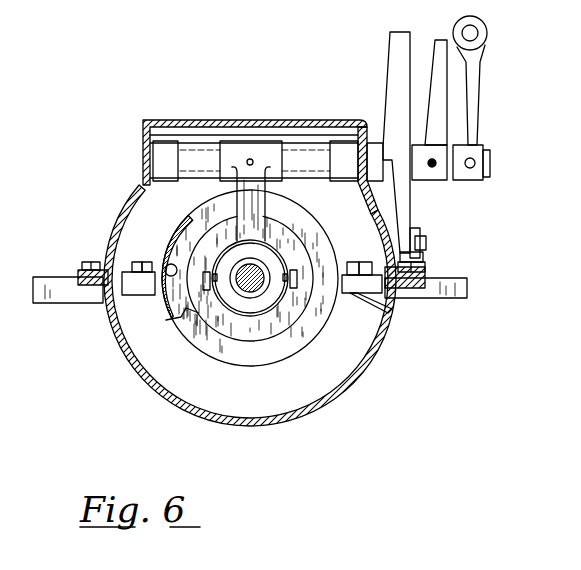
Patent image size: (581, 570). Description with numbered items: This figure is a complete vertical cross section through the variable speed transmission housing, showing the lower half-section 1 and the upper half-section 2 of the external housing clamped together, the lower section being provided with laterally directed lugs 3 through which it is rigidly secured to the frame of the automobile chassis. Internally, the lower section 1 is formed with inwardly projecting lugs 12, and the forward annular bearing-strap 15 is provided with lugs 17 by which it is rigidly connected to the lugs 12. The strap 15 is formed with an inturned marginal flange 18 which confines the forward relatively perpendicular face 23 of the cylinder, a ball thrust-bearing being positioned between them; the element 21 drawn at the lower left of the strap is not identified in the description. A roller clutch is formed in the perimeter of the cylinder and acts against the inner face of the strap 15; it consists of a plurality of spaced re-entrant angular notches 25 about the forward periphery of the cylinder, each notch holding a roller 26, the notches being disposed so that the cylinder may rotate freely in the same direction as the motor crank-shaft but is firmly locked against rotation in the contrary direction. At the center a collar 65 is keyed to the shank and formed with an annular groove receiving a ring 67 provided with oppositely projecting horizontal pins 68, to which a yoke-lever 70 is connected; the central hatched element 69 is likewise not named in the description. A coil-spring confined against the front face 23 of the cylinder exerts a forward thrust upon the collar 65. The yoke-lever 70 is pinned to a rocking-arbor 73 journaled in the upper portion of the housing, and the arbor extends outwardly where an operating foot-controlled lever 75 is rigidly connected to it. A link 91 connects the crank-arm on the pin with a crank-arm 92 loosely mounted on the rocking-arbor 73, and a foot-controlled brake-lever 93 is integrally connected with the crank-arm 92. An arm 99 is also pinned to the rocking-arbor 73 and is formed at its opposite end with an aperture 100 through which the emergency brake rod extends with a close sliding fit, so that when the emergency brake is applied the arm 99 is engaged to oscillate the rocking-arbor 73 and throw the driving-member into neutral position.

The lower half-section of the external housing 1 is at (378, 358).
The upper half-section of the external housing 2 is at (115, 215).
The laterally directed lugs 3 is at (43, 283).
The projecting lugs 12 is at (108, 303).
The forward annular bearing-strap 15 is at (177, 303).
The lugs of the bearing-straps 17 is at (128, 318).
The inturned marginal flange 18 is at (307, 330).
The band end 21 is at (183, 327).
The forward face of the cylinder 23 is at (283, 320).
The re-entrant angular notches 25 is at (168, 265).
The roller 26 is at (160, 266).
The collar 65 is at (230, 285).
The ring 67 is at (245, 313).
The oppositely projecting pins 68 is at (300, 277).
The shaft 69 is at (250, 290).
The yoke-lever 70 is at (255, 222).
The rocking-arbor 73 is at (302, 155).
The foot-controlled lever 75 is at (440, 110).
The link 91 is at (423, 252).
The crank-arm 92 is at (405, 217).
The foot-controlled brake-lever 93 is at (393, 77).
The arm 99 is at (463, 72).
The aperture 100 is at (472, 33).